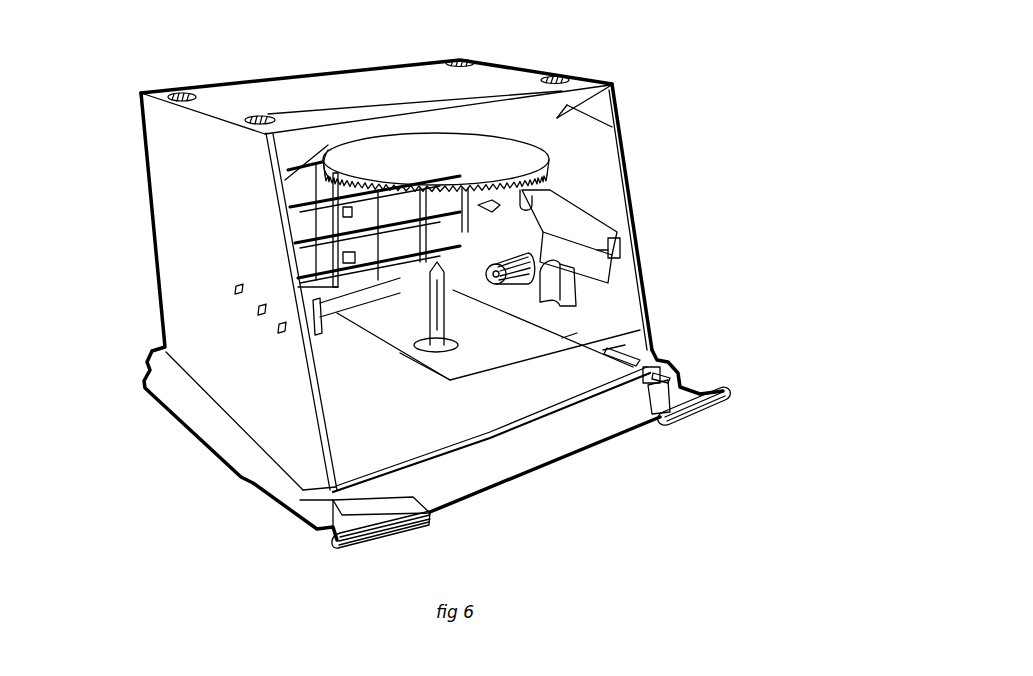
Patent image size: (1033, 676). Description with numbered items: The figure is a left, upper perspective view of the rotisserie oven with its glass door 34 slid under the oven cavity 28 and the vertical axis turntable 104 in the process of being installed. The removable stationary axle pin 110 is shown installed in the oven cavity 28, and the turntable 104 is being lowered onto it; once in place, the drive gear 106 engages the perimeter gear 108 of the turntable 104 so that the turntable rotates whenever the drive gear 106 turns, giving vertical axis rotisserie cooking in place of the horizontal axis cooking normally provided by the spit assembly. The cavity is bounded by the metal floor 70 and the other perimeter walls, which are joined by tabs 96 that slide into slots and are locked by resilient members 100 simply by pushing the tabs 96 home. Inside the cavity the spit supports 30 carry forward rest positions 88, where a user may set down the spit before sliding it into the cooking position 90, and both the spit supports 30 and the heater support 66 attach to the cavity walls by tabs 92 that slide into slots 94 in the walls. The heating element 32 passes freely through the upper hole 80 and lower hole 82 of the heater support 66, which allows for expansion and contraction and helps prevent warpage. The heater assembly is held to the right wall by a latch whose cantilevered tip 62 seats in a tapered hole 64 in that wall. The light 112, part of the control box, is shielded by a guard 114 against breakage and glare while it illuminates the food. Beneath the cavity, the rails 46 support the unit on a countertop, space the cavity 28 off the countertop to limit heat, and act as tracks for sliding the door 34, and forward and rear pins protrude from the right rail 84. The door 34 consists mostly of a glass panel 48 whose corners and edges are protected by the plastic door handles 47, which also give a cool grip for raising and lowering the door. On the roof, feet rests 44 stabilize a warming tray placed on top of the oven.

The oven cavity 28 is at (612, 84).
The spit supports 30 is at (620, 260).
The heating element 32 is at (326, 203).
The glass door 34 is at (643, 420).
The feet rests 44 is at (178, 92).
The rails 46 is at (200, 412).
The door handles 47 is at (388, 512).
The glass panel 48 is at (432, 493).
The cantilevered tip 62 is at (522, 190).
The tapered hole 64 is at (585, 185).
The heater support 66 is at (327, 216).
The metal floor 70 is at (335, 455).
The upper hole 80 is at (317, 176).
The lower hole 82 is at (330, 254).
The right rail 84 is at (670, 377).
The forward rest positions 88 is at (610, 225).
The cooking position 90 is at (562, 199).
The tabs 92 is at (335, 200).
The slots 94 is at (238, 290).
The tabs 96 is at (620, 335).
The resilient members 100 is at (600, 353).
The vertical axis turntable 104 is at (497, 150).
The drive gear 106 is at (510, 287).
The perimeter gear 108 is at (500, 196).
The stationary axle pin 110 is at (433, 262).
The light 112 is at (540, 280).
The guard 114 is at (568, 337).